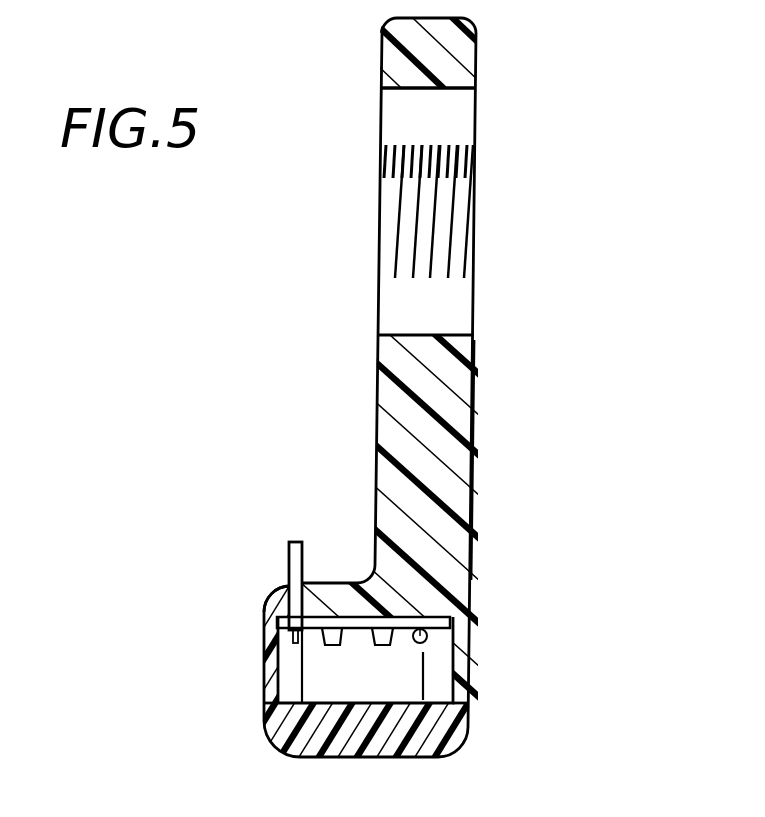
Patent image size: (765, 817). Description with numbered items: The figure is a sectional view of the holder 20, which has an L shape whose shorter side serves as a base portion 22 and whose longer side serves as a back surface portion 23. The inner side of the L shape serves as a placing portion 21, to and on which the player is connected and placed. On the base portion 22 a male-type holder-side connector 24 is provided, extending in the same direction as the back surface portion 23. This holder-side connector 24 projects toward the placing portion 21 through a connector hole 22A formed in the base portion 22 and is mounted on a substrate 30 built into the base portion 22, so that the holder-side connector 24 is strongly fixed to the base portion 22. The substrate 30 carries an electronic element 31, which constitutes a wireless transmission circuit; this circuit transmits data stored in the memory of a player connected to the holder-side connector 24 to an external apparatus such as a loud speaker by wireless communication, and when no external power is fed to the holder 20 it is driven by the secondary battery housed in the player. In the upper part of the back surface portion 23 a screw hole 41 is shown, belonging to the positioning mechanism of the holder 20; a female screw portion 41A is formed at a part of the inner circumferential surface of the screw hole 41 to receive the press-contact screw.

The holder 20 is at (527, 60).
The screw hole 41 is at (436, 90).
The female screw portion 41A is at (402, 213).
The placing portion 21 is at (378, 365).
The back surface portion 23 is at (473, 365).
The holder-side connector 24 is at (299, 541).
The connector hole 22A is at (288, 607).
The substrate 30 is at (455, 620).
The electronic element 31 is at (331, 640).
The base portion 22 is at (413, 734).